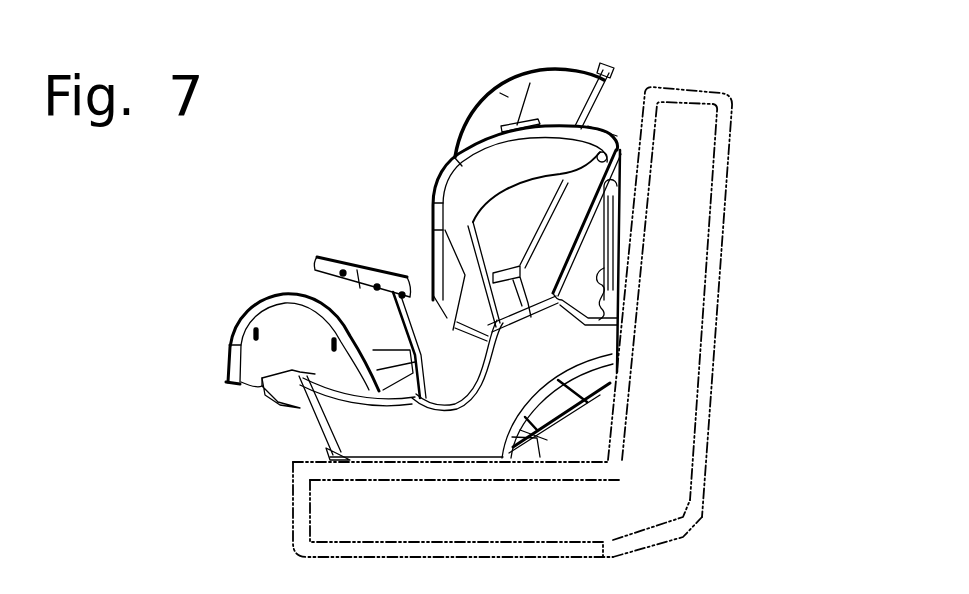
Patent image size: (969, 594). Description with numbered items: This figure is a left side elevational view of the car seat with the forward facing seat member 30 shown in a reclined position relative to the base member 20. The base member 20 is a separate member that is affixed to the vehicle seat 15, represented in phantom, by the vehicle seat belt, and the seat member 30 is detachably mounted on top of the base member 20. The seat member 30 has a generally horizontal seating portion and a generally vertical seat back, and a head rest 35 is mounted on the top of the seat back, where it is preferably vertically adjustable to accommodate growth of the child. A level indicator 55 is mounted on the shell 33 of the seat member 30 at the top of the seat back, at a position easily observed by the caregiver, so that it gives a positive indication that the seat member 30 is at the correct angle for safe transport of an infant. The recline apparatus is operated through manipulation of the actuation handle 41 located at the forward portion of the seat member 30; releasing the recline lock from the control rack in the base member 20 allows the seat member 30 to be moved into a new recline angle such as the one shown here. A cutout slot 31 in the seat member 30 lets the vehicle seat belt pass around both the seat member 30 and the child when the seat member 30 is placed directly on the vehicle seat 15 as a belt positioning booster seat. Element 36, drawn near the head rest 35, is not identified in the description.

The vehicle seat 15 is at (708, 268).
The base member 20 is at (608, 381).
The seat member 30 is at (432, 236).
The cutout slot 31 is at (368, 334).
The shell 33 is at (566, 154).
The head rest 35 is at (500, 93).
The canopy support arm 36 is at (618, 77).
The actuation handle 41 is at (225, 374).
The level indicator 55 is at (500, 128).